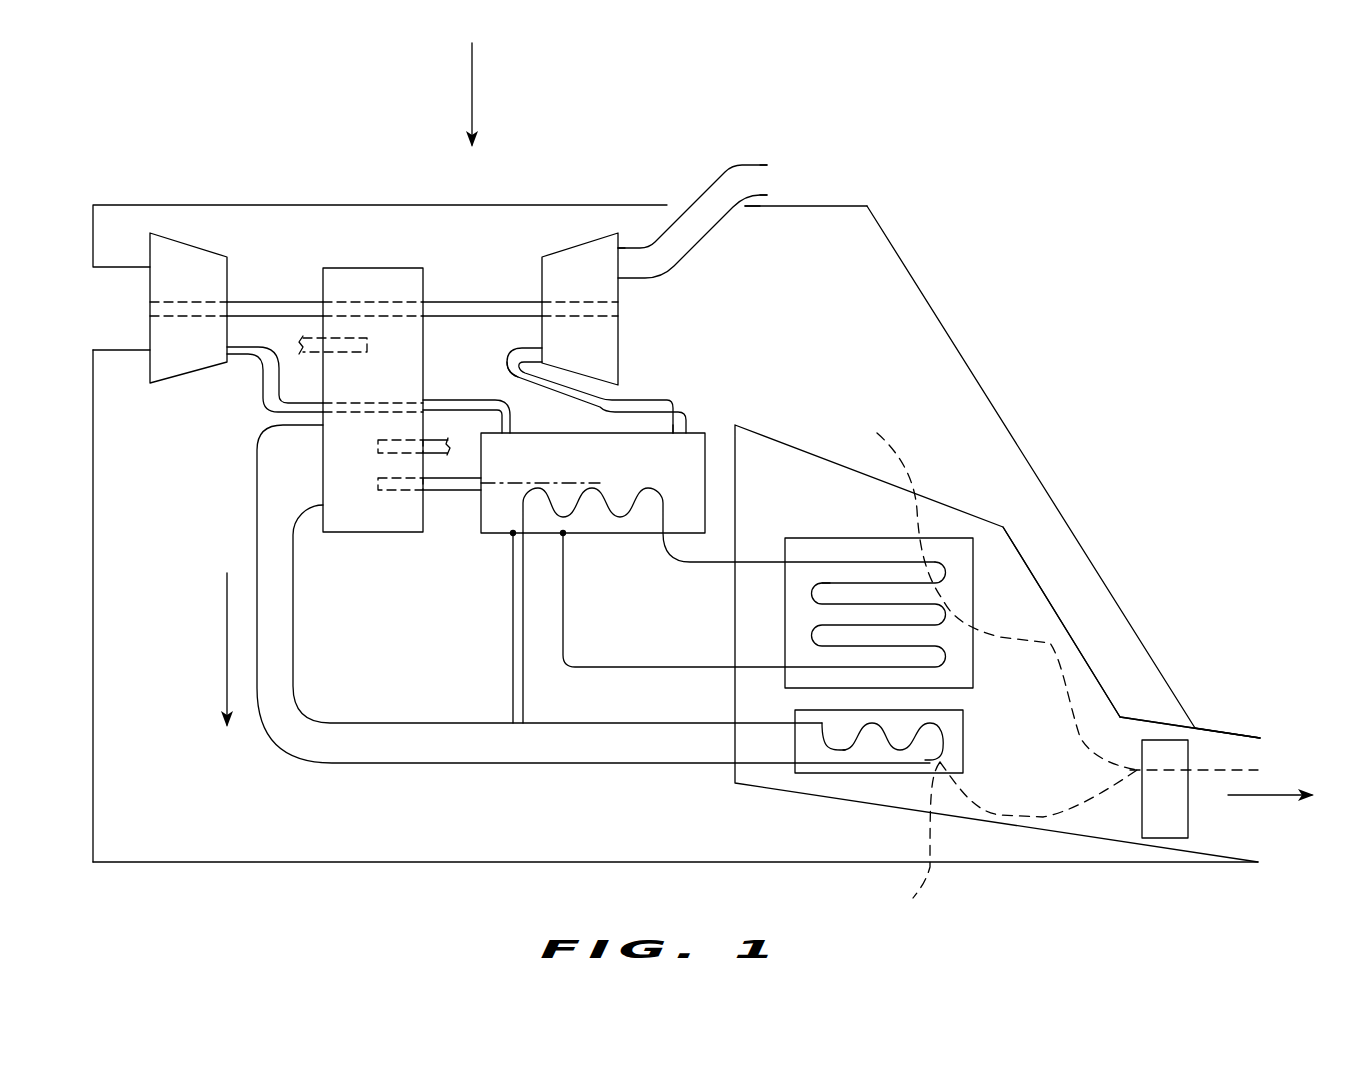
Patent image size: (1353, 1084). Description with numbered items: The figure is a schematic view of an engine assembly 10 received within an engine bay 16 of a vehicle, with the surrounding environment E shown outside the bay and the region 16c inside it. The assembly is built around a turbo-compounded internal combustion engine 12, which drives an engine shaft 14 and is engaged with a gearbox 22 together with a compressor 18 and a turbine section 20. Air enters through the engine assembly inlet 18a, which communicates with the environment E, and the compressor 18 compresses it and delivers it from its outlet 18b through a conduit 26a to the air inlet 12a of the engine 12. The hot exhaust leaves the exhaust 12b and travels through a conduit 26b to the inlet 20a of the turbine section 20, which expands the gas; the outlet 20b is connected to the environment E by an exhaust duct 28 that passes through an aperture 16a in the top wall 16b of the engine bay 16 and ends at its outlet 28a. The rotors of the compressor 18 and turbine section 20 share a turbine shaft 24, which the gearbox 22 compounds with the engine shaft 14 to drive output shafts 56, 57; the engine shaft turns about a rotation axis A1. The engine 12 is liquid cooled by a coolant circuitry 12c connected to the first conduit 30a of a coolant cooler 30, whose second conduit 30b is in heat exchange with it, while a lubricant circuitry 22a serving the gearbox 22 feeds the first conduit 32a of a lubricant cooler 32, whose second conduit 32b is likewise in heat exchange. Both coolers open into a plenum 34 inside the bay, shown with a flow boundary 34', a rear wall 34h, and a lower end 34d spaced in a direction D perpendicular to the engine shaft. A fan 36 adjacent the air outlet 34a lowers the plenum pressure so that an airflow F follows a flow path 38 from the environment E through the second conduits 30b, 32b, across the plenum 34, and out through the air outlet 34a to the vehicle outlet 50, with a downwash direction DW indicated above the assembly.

The engine assembly 10 is at (1085, 185).
The internal combustion engine 12 is at (700, 428).
The air inlet 12a is at (515, 430).
The exhaust 12b is at (680, 437).
The coolant circuitry 12c is at (572, 513).
The engine shaft 14 is at (450, 492).
The engine bay 16 is at (1057, 497).
The aperture 16a is at (743, 212).
The top wall 16b is at (845, 206).
The engine compartment 16c is at (190, 810).
The compressor 18 is at (183, 243).
The engine assembly inlet 18a is at (143, 336).
The outlet 18b is at (232, 360).
The turbine section 20 is at (574, 247).
The inlet 20a is at (537, 357).
The outlet 20b is at (628, 243).
The gearbox 22 is at (357, 267).
The lubricant circuitry 22a is at (296, 598).
The turbine shaft 24 is at (455, 300).
The conduit 26a is at (252, 438).
The conduit 26b is at (645, 400).
The exhaust duct 28 is at (733, 167).
The outlet 28a is at (768, 180).
The coolant cooler 30 is at (982, 653).
The first conduit 30a is at (908, 602).
The second conduit 30b is at (805, 572).
The lubricant cooler 32 is at (982, 752).
The first conduit 32a is at (943, 752).
The second conduit 32b is at (810, 743).
The plenum 34 is at (997, 605).
The air duct flow path 34' is at (1007, 559).
The air outlet 34a is at (1133, 787).
The lower end 34d is at (1152, 710).
The rear wall 34h is at (1042, 588).
The fan 36 is at (1178, 823).
The flow path 38 is at (1217, 768).
The outlet 50 is at (1208, 727).
The output shaft 56 is at (440, 438).
The output shaft 57 is at (310, 338).
The rotation axis A1 is at (498, 485).
The direction D is at (227, 657).
The downwash direction DW is at (475, 80).
The environment E is at (1186, 318).
The airflow F is at (1258, 795).